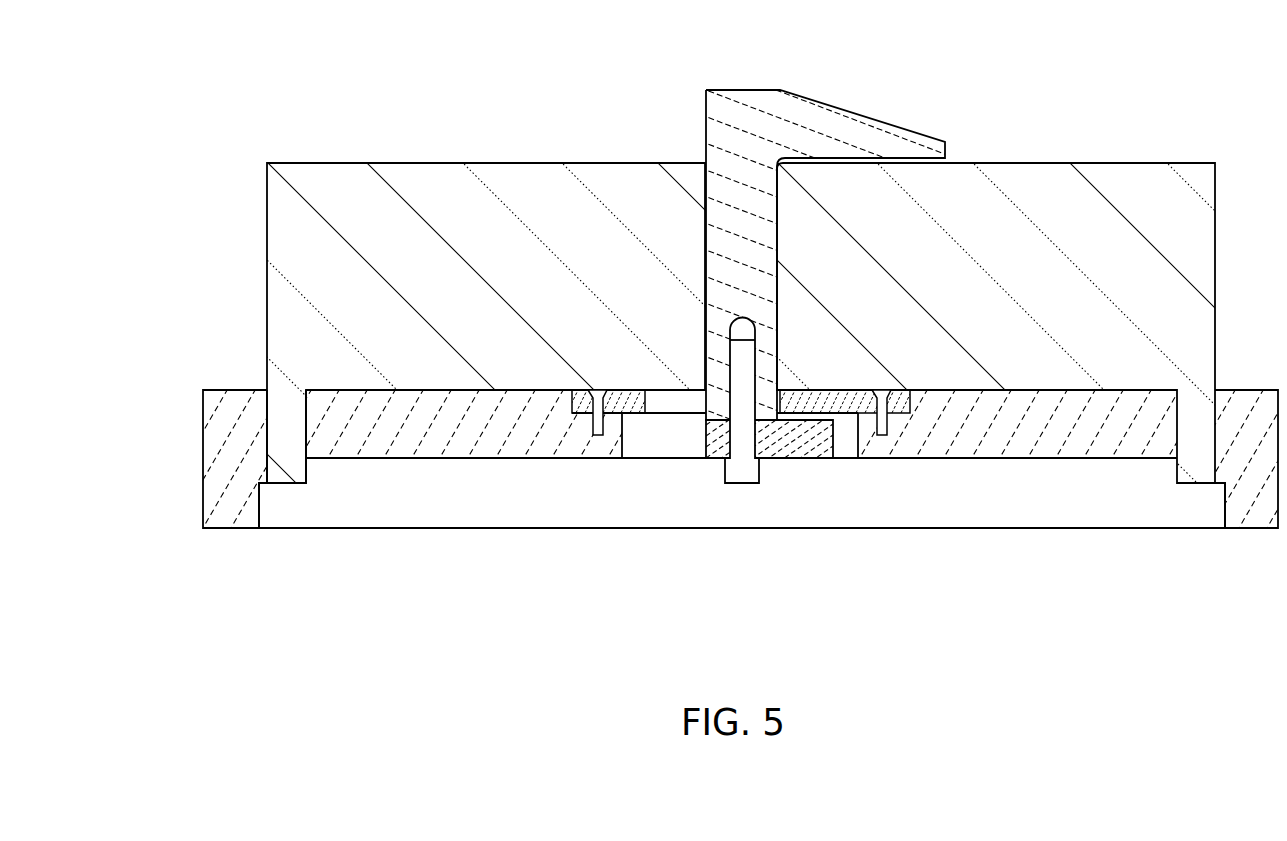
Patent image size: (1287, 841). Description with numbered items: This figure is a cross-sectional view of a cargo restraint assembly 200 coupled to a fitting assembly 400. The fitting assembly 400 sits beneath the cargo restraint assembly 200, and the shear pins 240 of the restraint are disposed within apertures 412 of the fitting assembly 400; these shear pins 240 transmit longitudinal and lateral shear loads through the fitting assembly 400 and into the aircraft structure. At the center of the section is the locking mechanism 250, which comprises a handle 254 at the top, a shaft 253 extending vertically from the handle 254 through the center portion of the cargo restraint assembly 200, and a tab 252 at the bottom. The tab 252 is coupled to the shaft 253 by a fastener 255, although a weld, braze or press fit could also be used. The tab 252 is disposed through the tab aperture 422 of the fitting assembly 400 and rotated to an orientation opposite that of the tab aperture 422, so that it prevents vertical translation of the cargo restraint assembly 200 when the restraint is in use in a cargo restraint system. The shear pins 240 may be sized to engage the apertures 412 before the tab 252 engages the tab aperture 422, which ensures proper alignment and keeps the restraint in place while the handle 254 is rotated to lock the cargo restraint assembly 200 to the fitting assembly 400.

The cargo restraint assembly 200 is at (322, 158).
The shear pins 240 is at (278, 458).
The locking mechanism 250 is at (731, 266).
The tab 252 is at (818, 452).
The shaft 253 is at (734, 258).
The handle 254 is at (820, 135).
The fastener 255 is at (750, 460).
The fitting assembly 400 is at (231, 447).
The apertures 412 is at (268, 415).
The tab aperture 422 is at (670, 397).